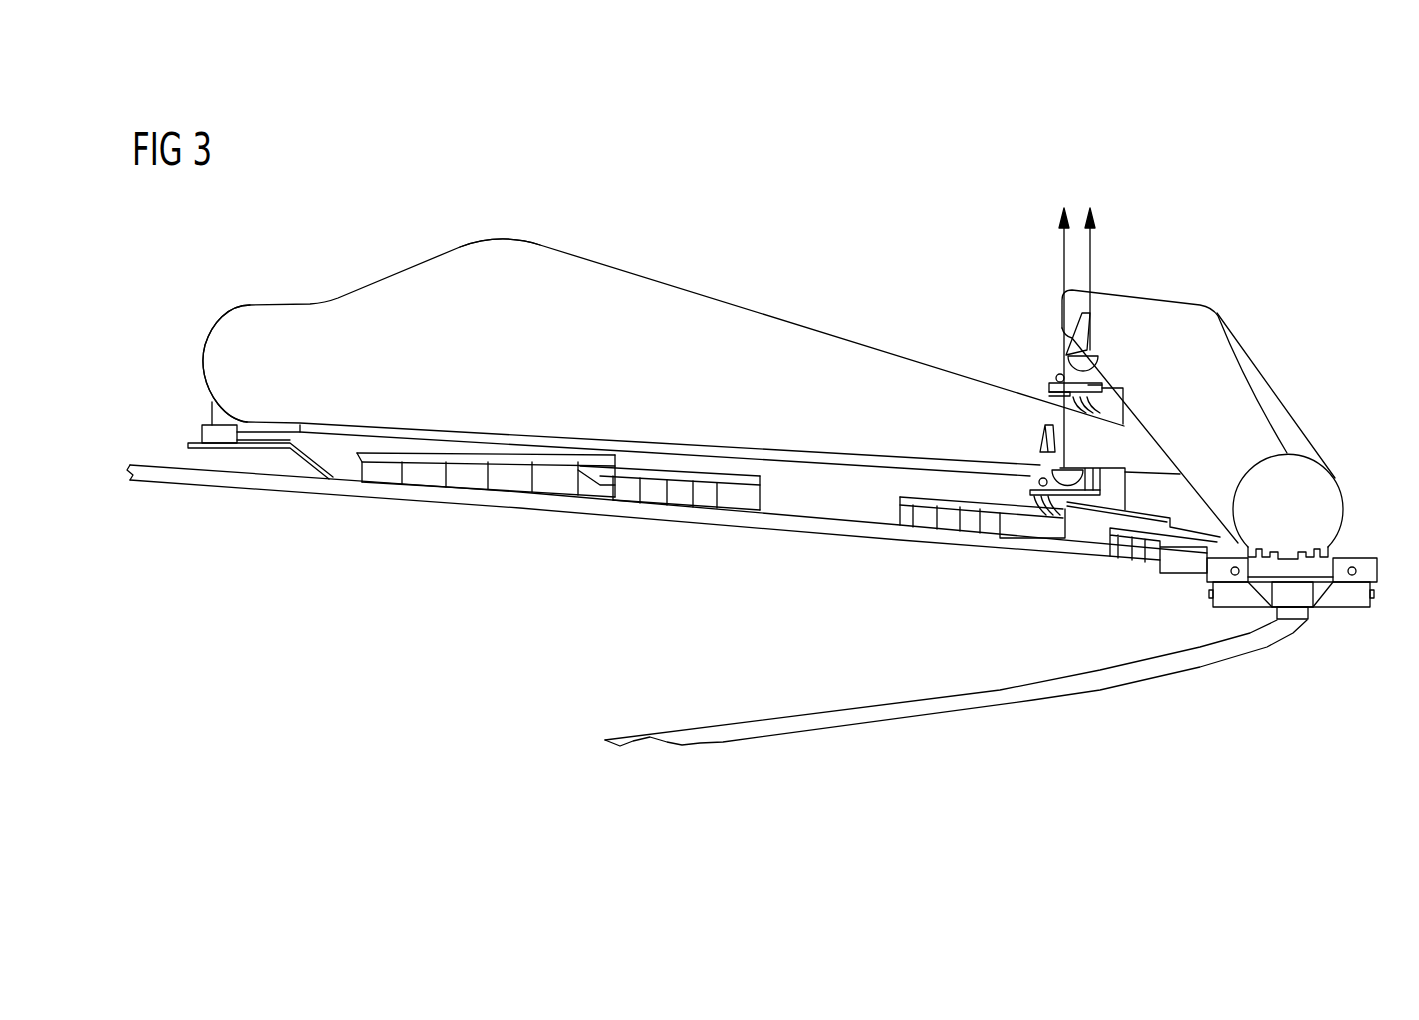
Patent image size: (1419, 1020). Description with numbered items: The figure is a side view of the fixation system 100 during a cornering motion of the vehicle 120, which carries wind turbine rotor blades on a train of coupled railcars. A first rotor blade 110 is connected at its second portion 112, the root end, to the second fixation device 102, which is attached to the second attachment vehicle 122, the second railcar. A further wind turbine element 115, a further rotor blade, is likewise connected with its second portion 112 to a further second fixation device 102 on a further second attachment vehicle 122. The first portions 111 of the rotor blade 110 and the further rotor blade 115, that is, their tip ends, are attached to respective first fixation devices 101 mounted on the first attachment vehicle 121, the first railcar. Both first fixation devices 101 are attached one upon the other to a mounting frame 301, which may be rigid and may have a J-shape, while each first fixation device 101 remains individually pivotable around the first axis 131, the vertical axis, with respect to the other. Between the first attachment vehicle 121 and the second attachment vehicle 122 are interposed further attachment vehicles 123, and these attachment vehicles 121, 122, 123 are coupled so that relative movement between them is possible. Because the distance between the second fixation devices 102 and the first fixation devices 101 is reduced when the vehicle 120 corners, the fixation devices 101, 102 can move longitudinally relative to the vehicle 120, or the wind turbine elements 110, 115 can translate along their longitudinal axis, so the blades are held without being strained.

The fixation system 100 is at (769, 359).
The first rotor blade 110 is at (1215, 322).
The first portion 111 is at (1155, 448).
The second portion 112 is at (215, 328).
The further wind turbine element 115 is at (507, 248).
The first fixation device 101 is at (1087, 367).
The mounting frame 301 is at (1120, 400).
The second fixation device 102 is at (210, 413).
The vehicle 120 is at (600, 546).
The first attachment vehicle 121 is at (1013, 532).
The second attachment vehicle 122 is at (330, 470).
The further attachment vehicles 123 is at (727, 500).
The first axis 131 is at (1062, 258).